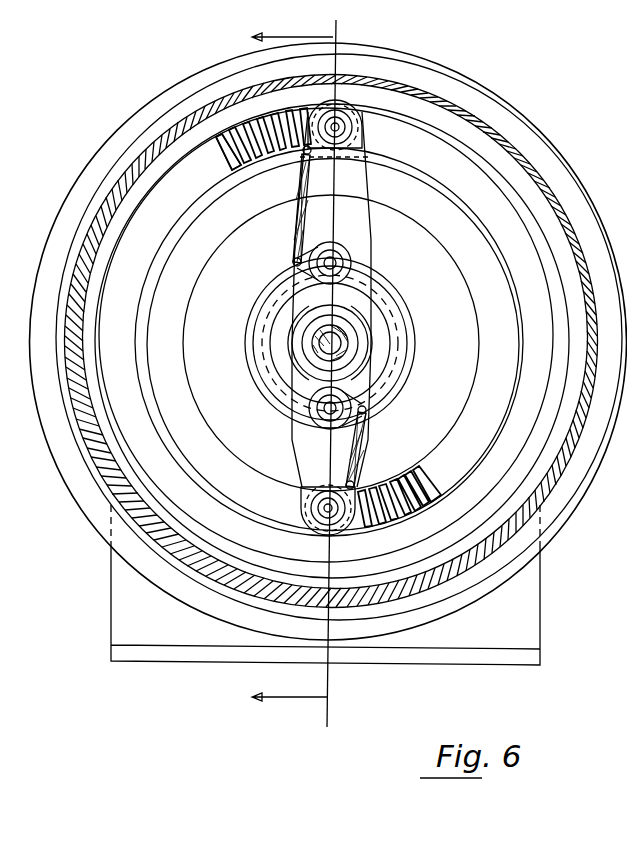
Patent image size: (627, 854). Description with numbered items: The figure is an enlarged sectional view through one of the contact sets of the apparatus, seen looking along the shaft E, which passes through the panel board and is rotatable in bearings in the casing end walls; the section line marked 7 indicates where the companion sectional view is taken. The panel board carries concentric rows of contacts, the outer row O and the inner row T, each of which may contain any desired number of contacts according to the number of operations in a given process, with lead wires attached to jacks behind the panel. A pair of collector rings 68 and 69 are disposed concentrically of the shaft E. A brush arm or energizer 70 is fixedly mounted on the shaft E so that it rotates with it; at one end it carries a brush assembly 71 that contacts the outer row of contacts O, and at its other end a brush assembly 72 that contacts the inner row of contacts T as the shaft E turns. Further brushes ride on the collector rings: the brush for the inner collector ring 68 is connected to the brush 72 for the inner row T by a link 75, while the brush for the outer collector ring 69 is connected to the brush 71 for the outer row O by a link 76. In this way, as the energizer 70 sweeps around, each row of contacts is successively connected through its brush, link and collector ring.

The section line 7- 7 is at (304, 373).
The brush assembly 71 is at (360, 108).
The outer row of contacts O is at (236, 130).
The brush arm or energizer 70 is at (332, 299).
The link 76 is at (298, 222).
The collector ring 68 is at (265, 322).
The shaft E is at (343, 336).
The collector ring 69 is at (264, 386).
The brush assembly 72 is at (296, 452).
The link 75 is at (362, 456).
The inner row of contacts T is at (412, 470).